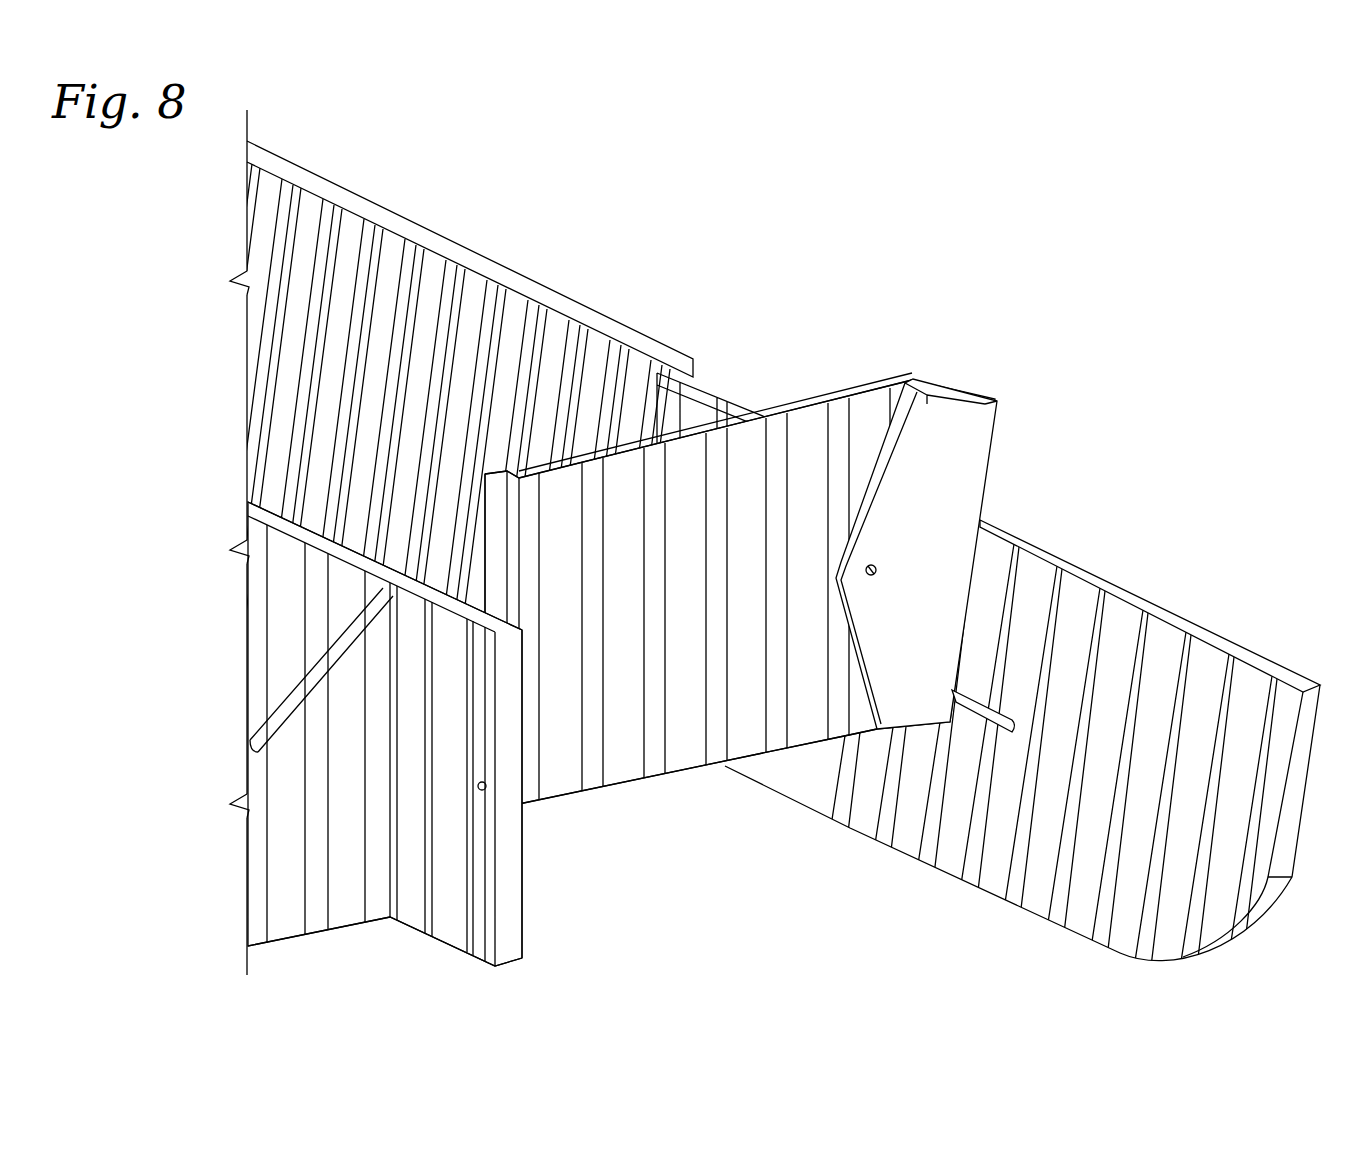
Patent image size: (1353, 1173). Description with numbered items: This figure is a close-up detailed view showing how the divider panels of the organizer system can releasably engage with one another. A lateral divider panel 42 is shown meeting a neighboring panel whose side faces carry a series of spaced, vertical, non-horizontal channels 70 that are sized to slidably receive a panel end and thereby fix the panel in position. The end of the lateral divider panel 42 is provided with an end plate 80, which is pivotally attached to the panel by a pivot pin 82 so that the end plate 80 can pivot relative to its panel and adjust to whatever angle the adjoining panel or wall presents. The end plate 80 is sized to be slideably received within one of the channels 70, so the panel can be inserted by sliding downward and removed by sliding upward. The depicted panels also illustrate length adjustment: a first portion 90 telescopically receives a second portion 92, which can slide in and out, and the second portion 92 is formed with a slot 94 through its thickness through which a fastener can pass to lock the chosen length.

The lateral divider panel 42 is at (855, 381).
The channel 70 is at (1022, 739).
The end plate 80 is at (973, 442).
The pivot pin 82 is at (878, 574).
The first portion 90 is at (491, 271).
The second portion 92 is at (1185, 625).
The slot 94 is at (980, 720).